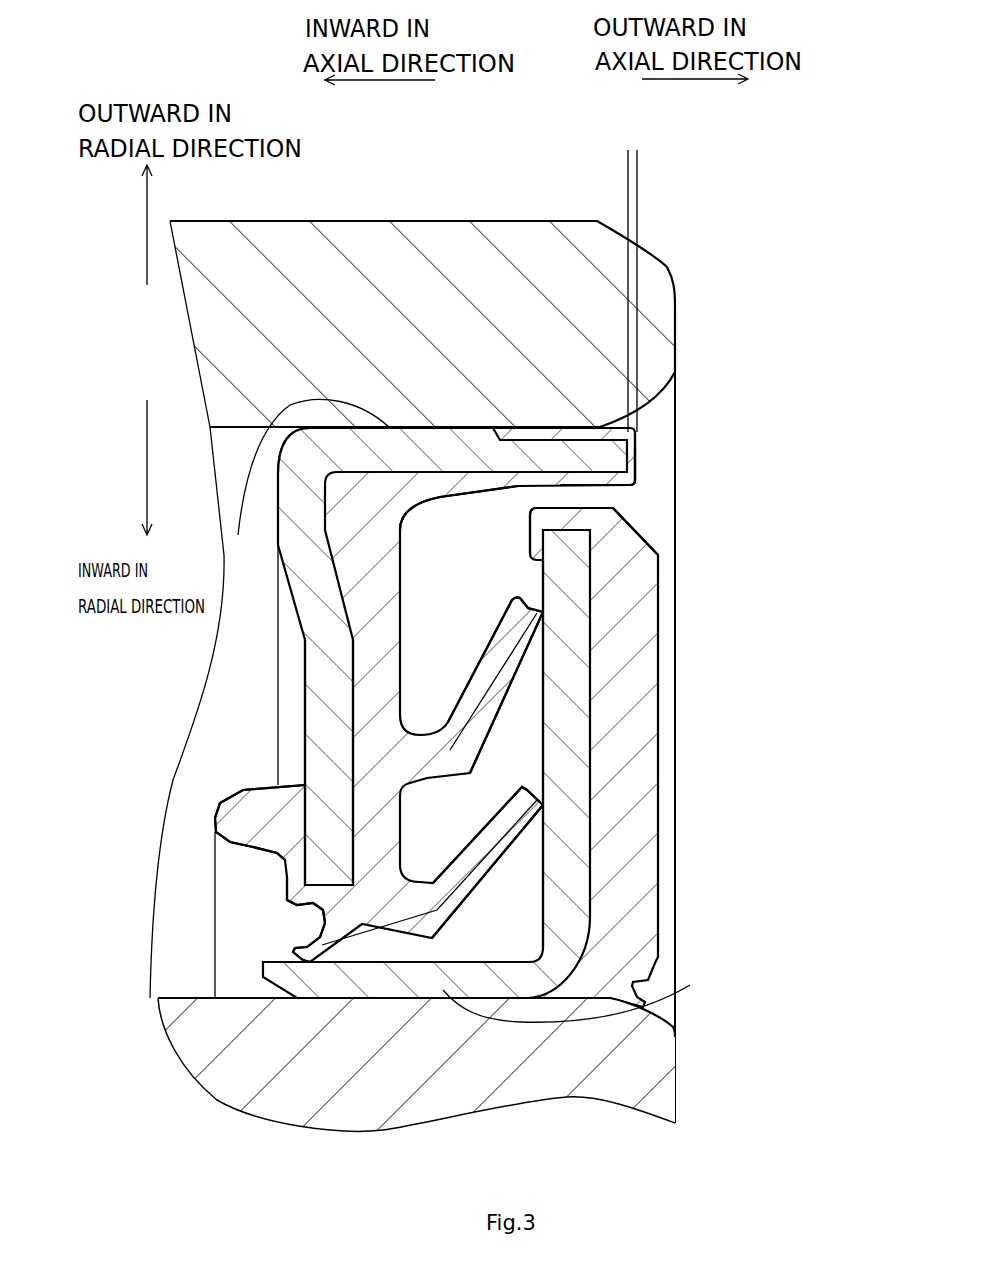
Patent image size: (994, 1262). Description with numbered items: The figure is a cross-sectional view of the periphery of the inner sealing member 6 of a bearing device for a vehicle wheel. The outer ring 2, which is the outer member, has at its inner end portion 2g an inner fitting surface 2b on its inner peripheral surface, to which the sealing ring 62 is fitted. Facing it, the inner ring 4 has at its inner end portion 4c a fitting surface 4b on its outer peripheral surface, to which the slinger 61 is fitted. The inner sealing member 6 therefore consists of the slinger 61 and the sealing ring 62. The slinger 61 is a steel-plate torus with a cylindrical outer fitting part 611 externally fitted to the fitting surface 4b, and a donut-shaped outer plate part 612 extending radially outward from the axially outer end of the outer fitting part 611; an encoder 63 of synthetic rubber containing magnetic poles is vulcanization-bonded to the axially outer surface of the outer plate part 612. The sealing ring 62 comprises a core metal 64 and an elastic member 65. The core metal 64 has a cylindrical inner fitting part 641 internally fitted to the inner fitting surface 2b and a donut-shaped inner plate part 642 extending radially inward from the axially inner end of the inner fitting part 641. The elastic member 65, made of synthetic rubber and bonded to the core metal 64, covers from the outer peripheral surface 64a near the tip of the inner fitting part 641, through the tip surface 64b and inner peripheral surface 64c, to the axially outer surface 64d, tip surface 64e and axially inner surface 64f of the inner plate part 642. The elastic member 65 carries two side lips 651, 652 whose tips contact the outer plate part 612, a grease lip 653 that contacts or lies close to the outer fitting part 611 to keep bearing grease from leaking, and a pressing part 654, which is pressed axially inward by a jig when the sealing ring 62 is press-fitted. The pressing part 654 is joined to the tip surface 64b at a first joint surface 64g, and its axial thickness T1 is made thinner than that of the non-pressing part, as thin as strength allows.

The outer ring 2 is at (676, 272).
The inner fitting surface 2b is at (237, 427).
The inner end portion 2g is at (665, 320).
The inner ring 4 is at (687, 1105).
The fitting surface 4b is at (165, 998).
The inner end portion 4c is at (653, 1062).
The inner sealing member 6 is at (195, 921).
The slinger 61 is at (755, 880).
The outer fitting part 611 is at (652, 990).
The outer plate part 612 is at (575, 893).
The sealing ring 62 is at (292, 718).
The encoder 63 is at (645, 762).
The core metal 64 is at (133, 625).
The inner fitting part 641 is at (225, 628).
The inner plate part 642 is at (320, 683).
The outer peripheral surface 64a is at (560, 427).
The tip surface 64b is at (637, 437).
The inner peripheral surface 64c is at (488, 475).
The axially outer surface 64d is at (353, 667).
The tip surface 64e is at (297, 909).
The axially inner surface 64f is at (275, 802).
The first joint surface 64g is at (637, 456).
The elastic member 65 is at (755, 485).
The side lip 651 is at (603, 657).
The side lip 652 is at (520, 622).
The grease lip 653 is at (515, 820).
The pressing part 654 is at (638, 462).
The axial thickness T1 is at (647, 161).